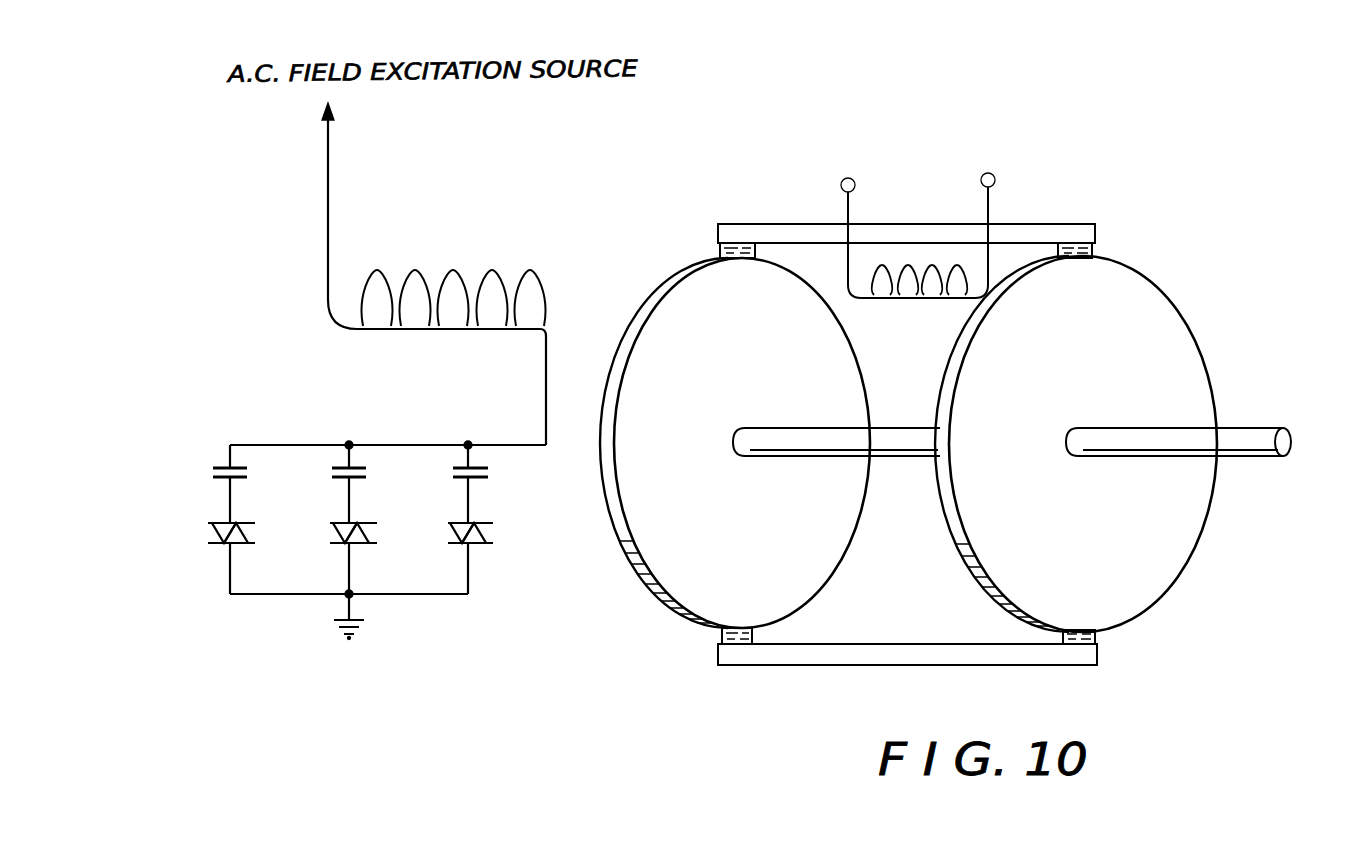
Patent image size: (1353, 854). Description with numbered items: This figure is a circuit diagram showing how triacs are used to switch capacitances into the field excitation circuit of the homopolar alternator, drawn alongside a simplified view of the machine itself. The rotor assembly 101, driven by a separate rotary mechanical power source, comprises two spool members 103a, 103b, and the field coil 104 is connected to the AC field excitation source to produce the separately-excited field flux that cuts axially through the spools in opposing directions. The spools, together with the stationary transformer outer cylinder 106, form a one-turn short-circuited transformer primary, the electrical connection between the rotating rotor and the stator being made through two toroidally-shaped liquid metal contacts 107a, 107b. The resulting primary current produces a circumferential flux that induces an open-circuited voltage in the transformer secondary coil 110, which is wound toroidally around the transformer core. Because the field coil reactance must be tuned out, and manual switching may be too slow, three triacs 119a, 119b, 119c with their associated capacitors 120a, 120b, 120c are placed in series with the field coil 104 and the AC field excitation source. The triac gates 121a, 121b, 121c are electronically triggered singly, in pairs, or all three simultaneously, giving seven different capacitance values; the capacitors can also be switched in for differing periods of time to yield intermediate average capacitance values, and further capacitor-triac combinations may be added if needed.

The rotor assembly 101 is at (1240, 433).
The spool member 103a is at (795, 355).
The spool member 103b is at (1150, 355).
The field coil 104 is at (459, 273).
The stationary transformer outer cylinder 106 is at (1060, 227).
The liquid metal contact 107a is at (719, 246).
The liquid metal contact 107b is at (1208, 232).
The transformer secondary coil 110 is at (980, 173).
The triac 119a is at (210, 522).
The triac 119b is at (341, 510).
The triac 119c is at (457, 510).
The capacitor 120a is at (213, 470).
The capacitor 120b is at (371, 427).
The capacitor 120c is at (485, 425).
The triac gate 121a is at (212, 544).
The triac gate 121b is at (345, 577).
The triac gate 121c is at (449, 545).